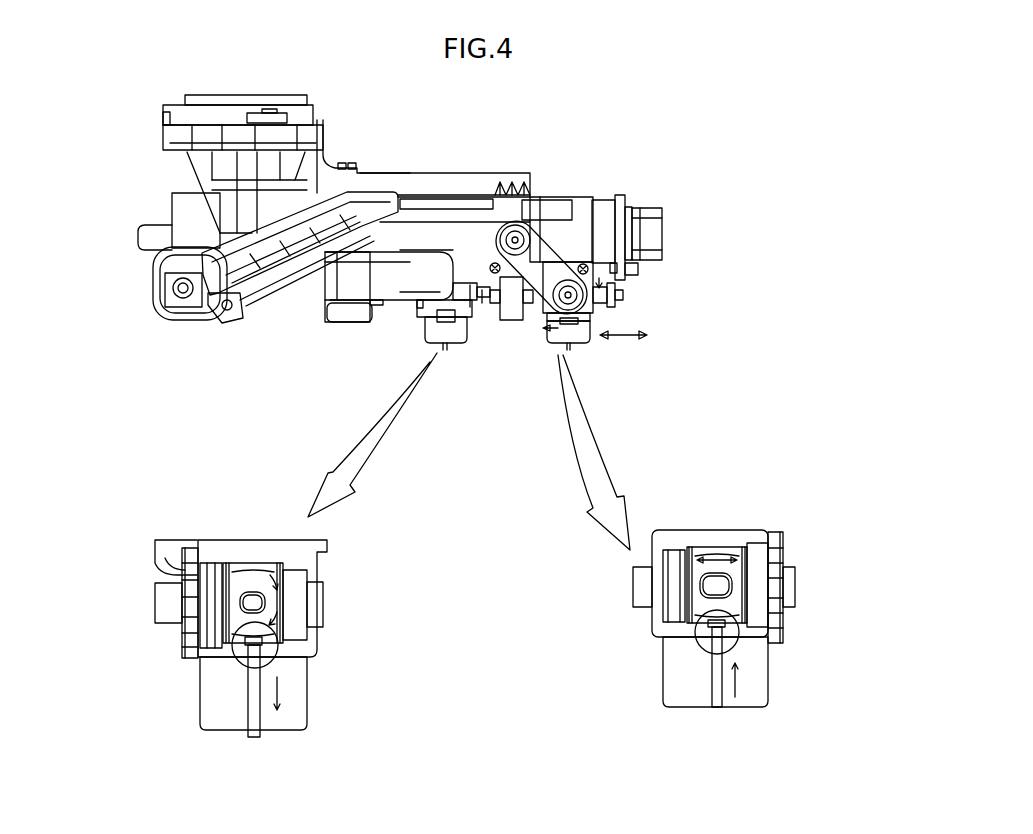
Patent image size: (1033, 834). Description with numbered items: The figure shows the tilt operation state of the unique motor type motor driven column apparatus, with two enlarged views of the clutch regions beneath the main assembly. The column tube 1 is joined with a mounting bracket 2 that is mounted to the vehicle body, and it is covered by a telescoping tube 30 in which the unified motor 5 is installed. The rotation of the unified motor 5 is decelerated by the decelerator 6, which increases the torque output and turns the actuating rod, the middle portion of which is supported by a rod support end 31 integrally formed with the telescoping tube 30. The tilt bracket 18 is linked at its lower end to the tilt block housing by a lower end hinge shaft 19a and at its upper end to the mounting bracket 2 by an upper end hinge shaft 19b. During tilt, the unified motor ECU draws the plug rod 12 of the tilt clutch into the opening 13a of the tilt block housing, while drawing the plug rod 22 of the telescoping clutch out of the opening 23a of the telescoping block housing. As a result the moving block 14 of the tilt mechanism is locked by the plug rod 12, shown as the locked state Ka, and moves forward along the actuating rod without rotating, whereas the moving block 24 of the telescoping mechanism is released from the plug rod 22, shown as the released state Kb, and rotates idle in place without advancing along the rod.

The column tube 1 is at (641, 222).
The mounting bracket 2 is at (394, 198).
The unified motor 5 is at (347, 277).
The decelerator 6 is at (347, 317).
The plug rod 12 is at (718, 710).
The opening 13a is at (703, 630).
The moving block 14 is at (735, 570).
The tilt bracket 18 is at (531, 312).
The lower end hinge shaft 19a is at (510, 236).
The upper end hinge shaft 19b is at (566, 286).
The plug rod 22 is at (257, 733).
The opening 23a is at (237, 645).
The moving block 24 is at (238, 583).
The telescoping tube 30 is at (577, 230).
The rod support end 31 is at (510, 315).
The locked state Ka is at (735, 637).
The released state Kb is at (267, 647).